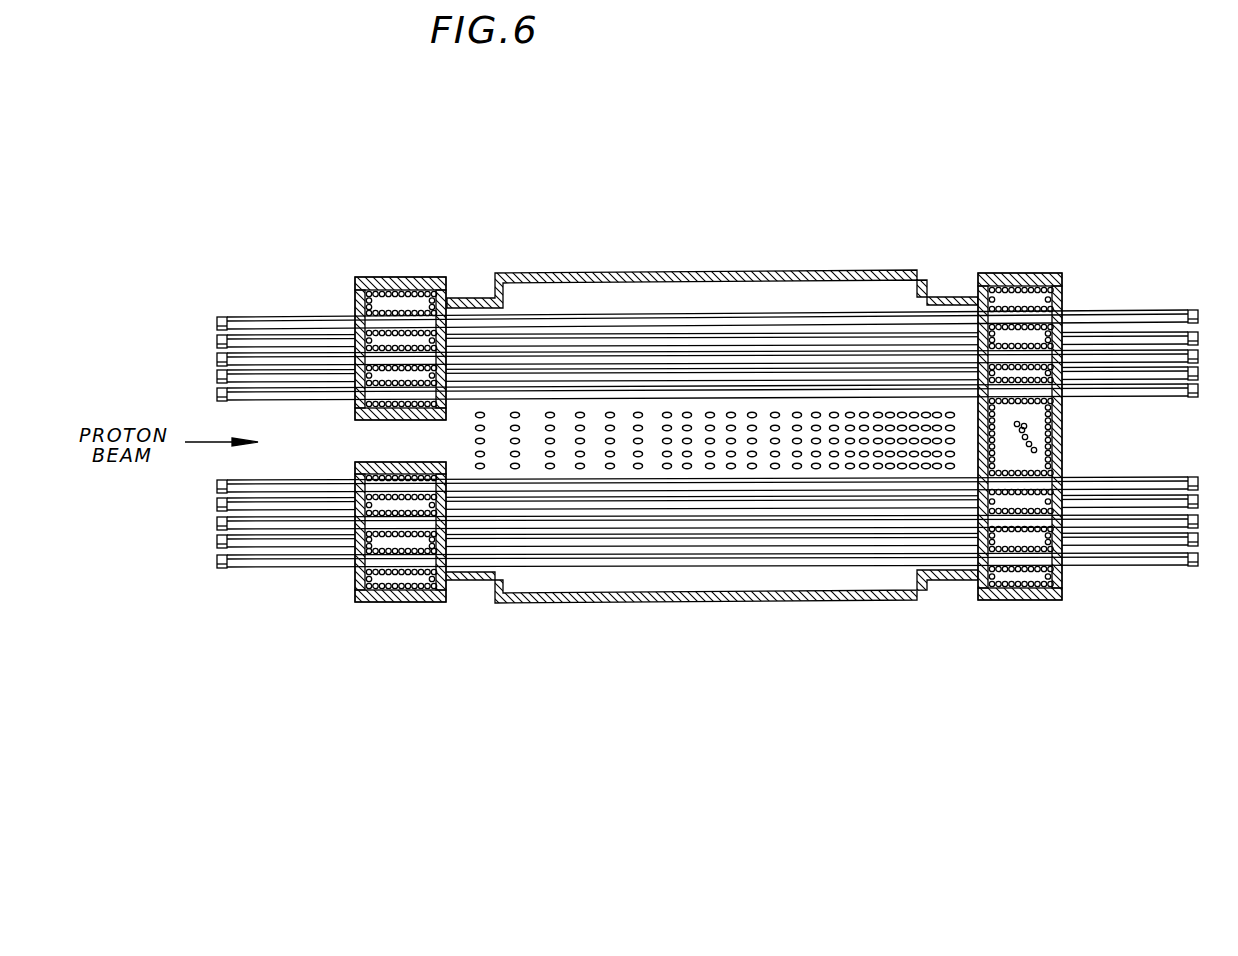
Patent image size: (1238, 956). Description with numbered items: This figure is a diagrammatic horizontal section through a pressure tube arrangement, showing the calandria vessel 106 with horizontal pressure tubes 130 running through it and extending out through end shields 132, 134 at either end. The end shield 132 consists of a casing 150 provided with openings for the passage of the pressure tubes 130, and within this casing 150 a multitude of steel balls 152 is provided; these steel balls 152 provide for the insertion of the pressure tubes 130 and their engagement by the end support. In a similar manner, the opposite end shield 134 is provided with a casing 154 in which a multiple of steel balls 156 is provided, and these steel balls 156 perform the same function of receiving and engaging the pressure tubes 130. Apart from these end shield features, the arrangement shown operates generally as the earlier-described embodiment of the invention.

The casing 106 is at (652, 604).
The heat pipe 130 is at (707, 485).
The downstream end block 132 is at (1054, 485).
The upstream end block 134 is at (383, 468).
The outer shell of end block 150 is at (1062, 578).
The packed spheres insulation 152 is at (1037, 466).
The outer shell of upstream block 154 is at (354, 592).
The packed spheres insulation 156 is at (424, 602).